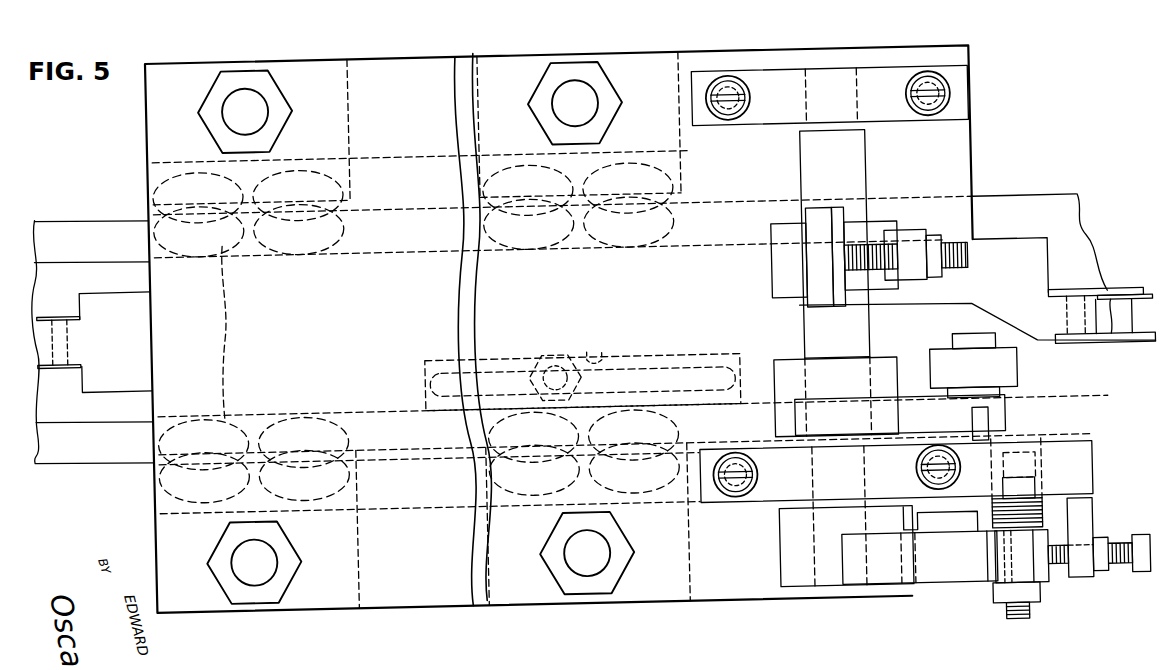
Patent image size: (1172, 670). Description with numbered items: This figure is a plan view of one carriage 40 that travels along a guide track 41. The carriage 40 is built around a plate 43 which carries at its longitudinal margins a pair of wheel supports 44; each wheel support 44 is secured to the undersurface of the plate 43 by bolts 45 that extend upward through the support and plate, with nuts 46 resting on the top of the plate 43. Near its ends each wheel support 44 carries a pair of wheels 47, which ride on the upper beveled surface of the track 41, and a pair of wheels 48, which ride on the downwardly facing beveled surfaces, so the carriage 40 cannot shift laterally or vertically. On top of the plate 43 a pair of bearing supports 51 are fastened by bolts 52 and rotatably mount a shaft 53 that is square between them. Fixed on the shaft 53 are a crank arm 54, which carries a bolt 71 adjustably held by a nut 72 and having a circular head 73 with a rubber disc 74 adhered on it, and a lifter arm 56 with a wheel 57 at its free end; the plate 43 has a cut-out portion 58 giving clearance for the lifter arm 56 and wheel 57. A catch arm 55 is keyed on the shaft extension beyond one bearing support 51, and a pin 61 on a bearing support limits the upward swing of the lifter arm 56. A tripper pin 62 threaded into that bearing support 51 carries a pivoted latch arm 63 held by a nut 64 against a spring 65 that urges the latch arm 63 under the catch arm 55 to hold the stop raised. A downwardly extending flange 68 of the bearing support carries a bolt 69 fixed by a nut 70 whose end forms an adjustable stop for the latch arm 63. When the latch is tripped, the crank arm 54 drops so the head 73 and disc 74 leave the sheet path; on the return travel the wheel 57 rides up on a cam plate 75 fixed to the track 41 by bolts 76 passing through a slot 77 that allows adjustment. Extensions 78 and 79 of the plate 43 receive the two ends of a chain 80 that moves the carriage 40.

The carriage 40 is at (138, 198).
The guide track 41 is at (1018, 214).
The plate 43 is at (631, 327).
The wheel support 44 is at (470, 125).
The bolt 45 is at (265, 105).
The nut 46 is at (285, 127).
The wheel 47 is at (222, 337).
The wheel 48 is at (553, 251).
The bearing support 51 is at (701, 533).
The bolt 52 is at (727, 134).
The shaft 53 is at (864, 175).
The crank arm 54 is at (885, 247).
The catch arm 55 is at (818, 602).
The lifter arm 56 is at (890, 396).
The wheel 57 is at (1011, 387).
The cut-out portion 58 is at (958, 321).
The pin 61 is at (981, 437).
The tripper pin 62 is at (1006, 639).
The latch arm 63 is at (1034, 594).
The nut 64 is at (982, 618).
The spring 65 is at (996, 588).
The flange 68 is at (1072, 599).
The bolt 69 is at (1130, 595).
The nut 70 is at (1095, 559).
The bolt 71 is at (964, 276).
The nut 72 is at (930, 296).
The head 73 is at (834, 223).
The disc 74 is at (810, 223).
The cam plate 75 is at (452, 365).
The bolt 76 is at (548, 364).
The slot 77 is at (587, 365).
The extension 78 is at (113, 393).
The extension 79 is at (1056, 310).
The chain 80 is at (52, 366).